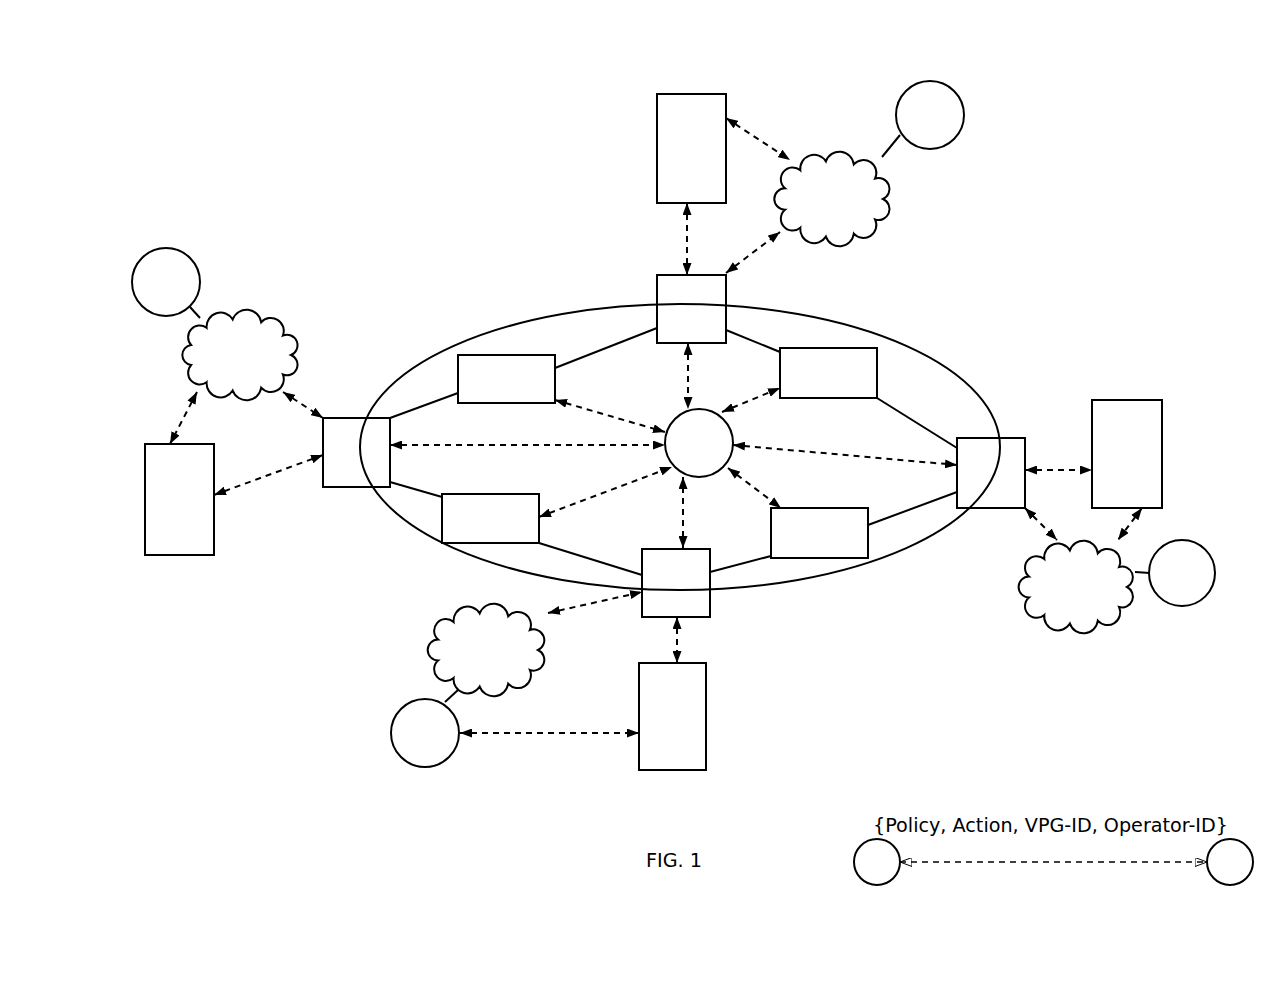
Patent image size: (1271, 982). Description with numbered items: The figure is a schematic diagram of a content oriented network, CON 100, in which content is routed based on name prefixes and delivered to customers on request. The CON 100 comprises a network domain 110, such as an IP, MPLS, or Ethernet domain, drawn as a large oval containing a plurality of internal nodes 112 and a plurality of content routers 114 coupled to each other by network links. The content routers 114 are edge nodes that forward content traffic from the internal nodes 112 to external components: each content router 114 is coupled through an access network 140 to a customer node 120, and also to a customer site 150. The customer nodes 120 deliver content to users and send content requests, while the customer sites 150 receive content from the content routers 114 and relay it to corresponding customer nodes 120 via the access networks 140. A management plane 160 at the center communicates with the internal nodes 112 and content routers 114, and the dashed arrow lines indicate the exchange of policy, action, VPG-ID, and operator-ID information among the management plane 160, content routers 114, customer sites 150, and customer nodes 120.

The content oriented network 100 is at (200, 112).
The network domain 110 is at (873, 562).
The internal node 112 is at (485, 403).
The content router 114 is at (323, 487).
The customer node 120 is at (944, 90).
The access network 140 is at (270, 310).
The customer site 150 is at (726, 96).
The management plane 160 is at (704, 477).